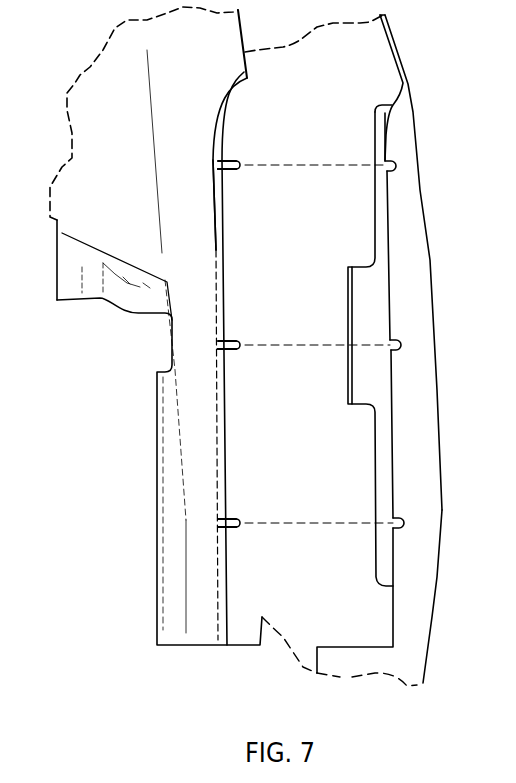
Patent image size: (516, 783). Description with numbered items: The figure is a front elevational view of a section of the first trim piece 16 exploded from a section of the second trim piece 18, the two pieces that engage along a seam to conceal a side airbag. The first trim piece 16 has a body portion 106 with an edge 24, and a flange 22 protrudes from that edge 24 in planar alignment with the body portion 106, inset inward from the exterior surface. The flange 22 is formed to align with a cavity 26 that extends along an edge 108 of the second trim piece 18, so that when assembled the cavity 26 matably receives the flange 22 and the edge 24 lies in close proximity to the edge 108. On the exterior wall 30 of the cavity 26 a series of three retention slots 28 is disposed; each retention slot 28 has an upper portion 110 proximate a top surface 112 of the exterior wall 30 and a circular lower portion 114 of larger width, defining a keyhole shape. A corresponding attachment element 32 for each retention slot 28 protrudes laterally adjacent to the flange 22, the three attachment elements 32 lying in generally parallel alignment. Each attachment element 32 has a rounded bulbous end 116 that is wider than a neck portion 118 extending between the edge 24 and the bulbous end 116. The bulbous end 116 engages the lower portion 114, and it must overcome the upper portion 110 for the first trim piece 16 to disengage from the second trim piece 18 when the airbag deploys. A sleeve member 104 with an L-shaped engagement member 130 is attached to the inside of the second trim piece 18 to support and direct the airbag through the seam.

The first trim piece 16 is at (173, 600).
The second trim piece 18 is at (410, 612).
The flange 22 is at (240, 458).
The edge 24 is at (217, 422).
The cavity 26 is at (387, 277).
The retention slot 28 is at (399, 166).
The exterior wall 30 is at (425, 423).
The attachment element 32 is at (232, 161).
The sleeve member 104 is at (375, 133).
The body portion 106 is at (88, 76).
The edge 108 is at (397, 250).
The upper portion 110 is at (392, 528).
The top surface 112 is at (393, 491).
The lower portion 114 is at (402, 537).
The bulbous end 116 is at (238, 166).
The neck portion 118 is at (232, 172).
The L-shaped engagement member 130 is at (349, 312).